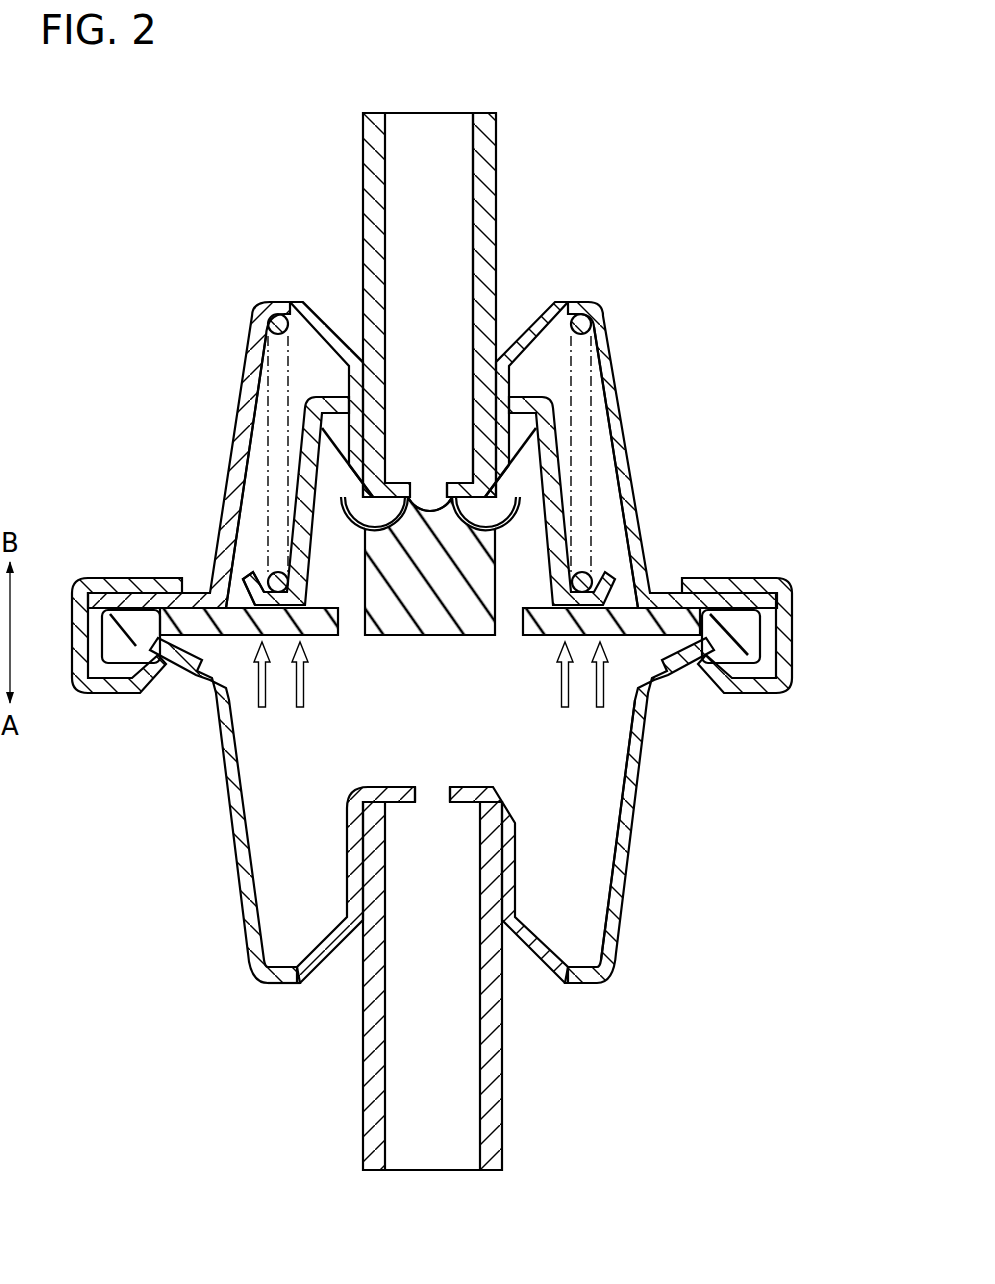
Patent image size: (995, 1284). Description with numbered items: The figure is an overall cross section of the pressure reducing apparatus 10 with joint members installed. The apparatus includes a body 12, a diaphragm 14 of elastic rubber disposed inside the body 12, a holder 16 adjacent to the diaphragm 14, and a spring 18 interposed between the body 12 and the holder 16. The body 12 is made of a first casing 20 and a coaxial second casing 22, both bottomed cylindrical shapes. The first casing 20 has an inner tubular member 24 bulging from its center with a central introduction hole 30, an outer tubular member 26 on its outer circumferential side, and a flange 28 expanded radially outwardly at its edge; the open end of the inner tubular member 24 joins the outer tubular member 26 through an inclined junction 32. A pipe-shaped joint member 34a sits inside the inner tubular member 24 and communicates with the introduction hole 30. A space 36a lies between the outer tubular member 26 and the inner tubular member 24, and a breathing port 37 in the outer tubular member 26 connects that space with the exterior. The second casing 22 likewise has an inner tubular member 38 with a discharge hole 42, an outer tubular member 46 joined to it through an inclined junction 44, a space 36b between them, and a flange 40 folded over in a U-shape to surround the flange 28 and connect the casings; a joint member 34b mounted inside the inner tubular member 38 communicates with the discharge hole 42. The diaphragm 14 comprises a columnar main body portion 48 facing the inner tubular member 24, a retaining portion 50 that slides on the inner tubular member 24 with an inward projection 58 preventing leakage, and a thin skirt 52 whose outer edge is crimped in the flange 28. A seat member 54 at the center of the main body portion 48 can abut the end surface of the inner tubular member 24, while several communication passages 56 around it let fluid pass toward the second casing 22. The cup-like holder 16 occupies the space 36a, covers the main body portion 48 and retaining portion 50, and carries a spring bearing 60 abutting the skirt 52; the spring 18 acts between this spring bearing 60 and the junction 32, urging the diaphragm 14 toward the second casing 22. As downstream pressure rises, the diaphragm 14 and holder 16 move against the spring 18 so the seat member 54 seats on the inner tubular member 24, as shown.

The pressure reducing apparatus 10 is at (752, 122).
The body 12 is at (632, 222).
The diaphragm 14 is at (458, 641).
The holder 16 is at (548, 433).
The spring 18 is at (266, 340).
The first casing 20 is at (240, 380).
The second casing 22 is at (226, 806).
The inner tubular member 24 is at (497, 405).
The outer tubular member 26 is at (637, 490).
The flange 28 is at (725, 600).
The introduction hole 30 is at (415, 493).
The junction 32 is at (581, 313).
The joint member 34a is at (366, 186).
The joint member 34b is at (498, 1143).
The space 36a is at (257, 463).
The space 36b is at (592, 897).
The breathing port 37 is at (623, 470).
The inner tubular member 38 is at (513, 850).
The flange 40 is at (757, 694).
The discharge hole 42 is at (420, 797).
The junction 44 is at (280, 985).
The outer tubular member 46 is at (636, 840).
The main body portion 48 is at (398, 628).
The retaining portion 50 is at (562, 380).
The skirt 52 is at (655, 695).
The seat member 54 is at (455, 482).
The communication passages 56 is at (353, 613).
The projection 58 is at (312, 440).
The spring bearing 60 is at (250, 585).